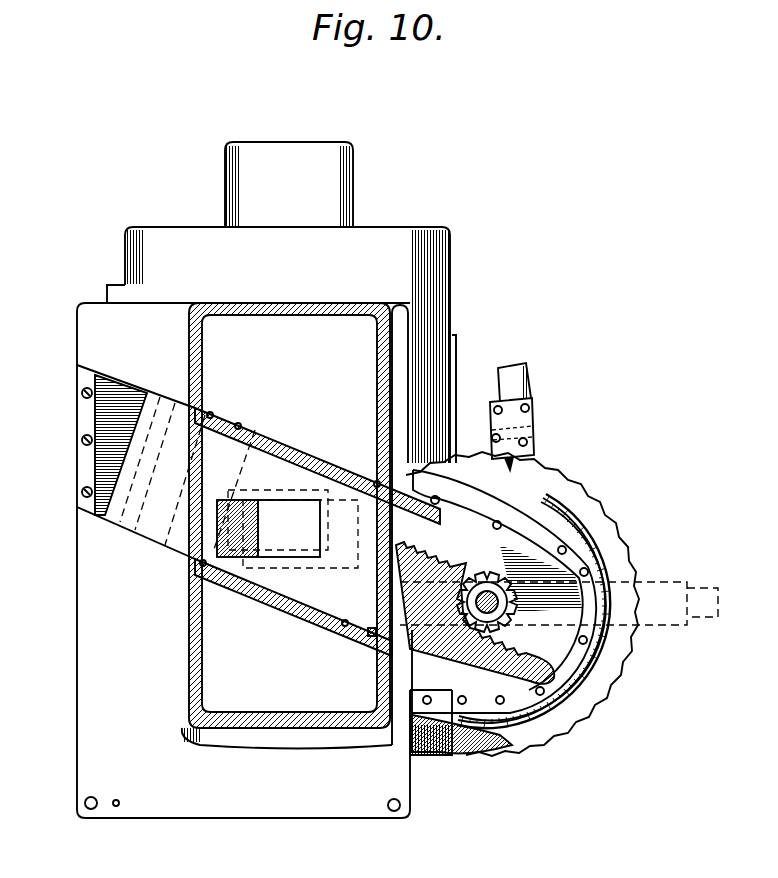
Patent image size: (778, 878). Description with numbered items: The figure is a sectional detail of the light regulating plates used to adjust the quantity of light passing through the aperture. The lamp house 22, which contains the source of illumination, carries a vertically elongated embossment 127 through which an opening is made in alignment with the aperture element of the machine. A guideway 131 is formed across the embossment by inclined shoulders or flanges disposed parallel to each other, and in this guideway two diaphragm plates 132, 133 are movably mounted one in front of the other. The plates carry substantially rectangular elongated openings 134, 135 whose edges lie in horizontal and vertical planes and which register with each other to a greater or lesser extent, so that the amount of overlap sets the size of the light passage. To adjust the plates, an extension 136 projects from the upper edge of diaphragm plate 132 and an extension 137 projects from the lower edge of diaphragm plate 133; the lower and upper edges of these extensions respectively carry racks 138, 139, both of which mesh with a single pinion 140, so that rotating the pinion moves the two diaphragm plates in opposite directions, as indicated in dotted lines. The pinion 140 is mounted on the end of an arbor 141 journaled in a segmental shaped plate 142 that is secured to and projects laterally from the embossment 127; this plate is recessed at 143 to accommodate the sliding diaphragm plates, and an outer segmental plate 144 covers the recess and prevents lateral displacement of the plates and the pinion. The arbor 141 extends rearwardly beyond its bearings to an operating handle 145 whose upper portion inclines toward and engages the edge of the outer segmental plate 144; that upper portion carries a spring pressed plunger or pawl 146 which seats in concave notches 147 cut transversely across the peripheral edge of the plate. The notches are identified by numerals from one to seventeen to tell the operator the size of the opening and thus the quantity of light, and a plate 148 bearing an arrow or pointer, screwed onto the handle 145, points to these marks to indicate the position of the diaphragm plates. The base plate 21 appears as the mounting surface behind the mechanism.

The base plate 21 is at (243, 560).
The lamp house 22 is at (412, 242).
The embossment 127 is at (370, 345).
The guideway 131 is at (265, 428).
The diaphragm plate 132 is at (120, 487).
The diaphragm plate 133 is at (368, 632).
The elongated opening 134 is at (215, 533).
The elongated opening 135 is at (258, 500).
The extension 136 is at (437, 538).
The extension 137 is at (497, 662).
The rack 138 is at (673, 590).
The rack 139 is at (578, 695).
The pinion 140 is at (420, 583).
The arbor 141 is at (486, 591).
The segmental shaped plate 142 is at (446, 688).
The recess 143 is at (600, 655).
The outer segmental plate 144 is at (548, 467).
The operating handle 145 is at (503, 370).
The spring pressed plunger or pawl 146 is at (513, 445).
The notches 147 is at (595, 497).
The plate 148 is at (512, 410).